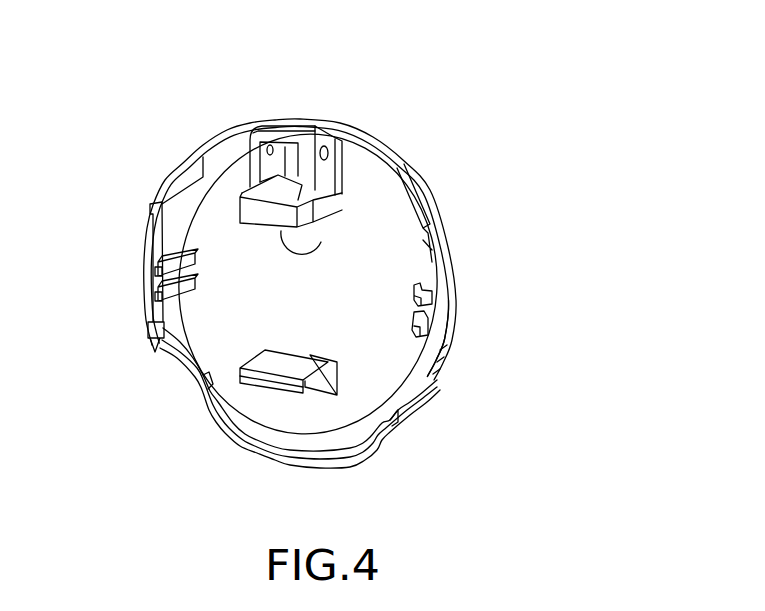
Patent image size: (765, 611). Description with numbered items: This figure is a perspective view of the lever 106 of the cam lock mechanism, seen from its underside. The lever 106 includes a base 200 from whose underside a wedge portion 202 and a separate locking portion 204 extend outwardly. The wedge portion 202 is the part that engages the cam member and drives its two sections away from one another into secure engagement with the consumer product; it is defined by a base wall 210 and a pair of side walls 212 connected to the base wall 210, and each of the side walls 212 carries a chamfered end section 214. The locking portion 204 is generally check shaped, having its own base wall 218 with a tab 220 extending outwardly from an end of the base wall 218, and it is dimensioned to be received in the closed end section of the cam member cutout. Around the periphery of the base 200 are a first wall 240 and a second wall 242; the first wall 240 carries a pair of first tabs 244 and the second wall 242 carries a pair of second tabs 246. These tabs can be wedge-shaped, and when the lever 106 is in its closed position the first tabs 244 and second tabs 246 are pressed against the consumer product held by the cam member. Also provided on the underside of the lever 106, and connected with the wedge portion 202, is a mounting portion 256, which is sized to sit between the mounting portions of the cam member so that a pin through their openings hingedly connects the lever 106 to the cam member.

The lever 106 is at (497, 224).
The base 200 is at (364, 196).
The wedge portion 202 is at (237, 233).
The locking portion 204 is at (267, 403).
The base wall 210 is at (262, 229).
The side walls 212 is at (249, 206).
The chamfered end section 214 is at (308, 218).
The base wall 218 is at (311, 359).
The tab 220 is at (250, 366).
The first wall 240 is at (142, 283).
The second wall 242 is at (442, 327).
The first tab 244 is at (167, 262).
The second tab 246 is at (423, 292).
The mounting portion 256 is at (297, 137).